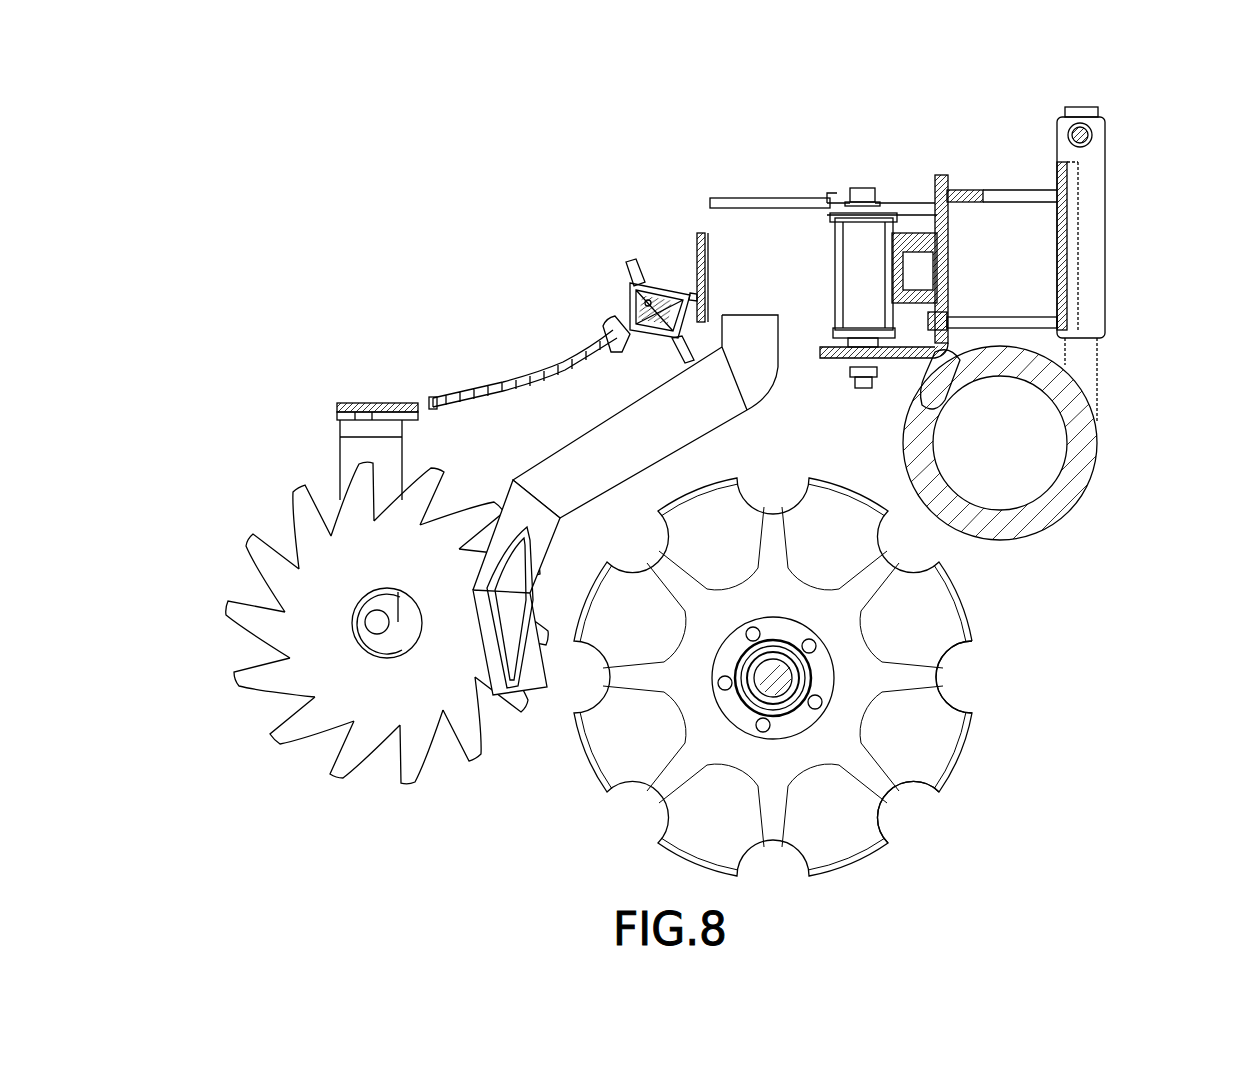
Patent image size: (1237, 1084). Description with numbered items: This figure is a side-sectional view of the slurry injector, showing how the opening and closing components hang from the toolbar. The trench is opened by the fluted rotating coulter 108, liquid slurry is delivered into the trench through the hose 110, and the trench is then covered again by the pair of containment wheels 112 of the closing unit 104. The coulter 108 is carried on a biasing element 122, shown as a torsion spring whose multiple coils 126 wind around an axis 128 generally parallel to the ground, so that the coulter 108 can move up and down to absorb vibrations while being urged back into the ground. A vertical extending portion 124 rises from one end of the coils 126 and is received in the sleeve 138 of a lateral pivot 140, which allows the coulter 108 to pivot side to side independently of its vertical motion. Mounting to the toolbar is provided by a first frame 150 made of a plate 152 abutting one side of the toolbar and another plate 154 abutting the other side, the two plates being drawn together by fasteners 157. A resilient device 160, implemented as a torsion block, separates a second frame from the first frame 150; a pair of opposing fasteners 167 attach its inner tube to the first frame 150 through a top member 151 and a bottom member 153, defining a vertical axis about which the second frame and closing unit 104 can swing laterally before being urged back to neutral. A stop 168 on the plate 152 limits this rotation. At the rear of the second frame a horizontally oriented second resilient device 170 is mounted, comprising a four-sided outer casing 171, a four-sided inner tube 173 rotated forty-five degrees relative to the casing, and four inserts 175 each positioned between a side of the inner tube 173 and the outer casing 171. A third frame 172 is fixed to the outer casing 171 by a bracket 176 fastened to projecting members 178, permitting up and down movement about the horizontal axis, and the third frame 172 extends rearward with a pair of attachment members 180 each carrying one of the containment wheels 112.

The closing unit 104 is at (266, 495).
The rotating coulter 108 is at (985, 598).
The hose 110 is at (580, 485).
The containment wheels 112 is at (367, 693).
The biasing element 122 is at (1073, 488).
The vertical extending portion 124 is at (1082, 110).
The multiple coils 126 is at (898, 803).
The axis 128 is at (617, 750).
The sleeve 138 is at (1095, 185).
The lateral pivot 140 is at (1120, 138).
The first frame 150 is at (973, 166).
The top member 151 is at (778, 200).
The plate 152 is at (943, 173).
The bottom member 153 is at (945, 380).
The plate 154 is at (1060, 262).
The fasteners 157 is at (1000, 320).
The resilient device 160 is at (853, 268).
The opposing fasteners 167 is at (858, 188).
The stop 168 is at (922, 240).
The second resilient device 170 is at (653, 286).
The outer casing 171 is at (643, 300).
The third frame 172 is at (480, 380).
The inner tube 173 is at (654, 348).
The inserts 175 is at (703, 297).
The bracket 176 is at (620, 312).
The projecting members 178 is at (627, 262).
The attachment members 180 is at (350, 462).